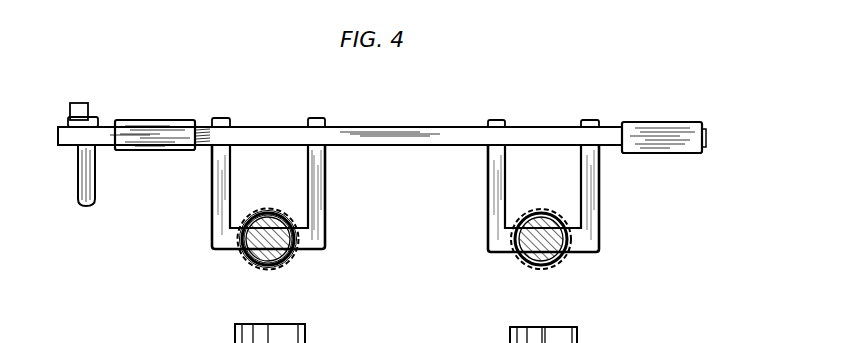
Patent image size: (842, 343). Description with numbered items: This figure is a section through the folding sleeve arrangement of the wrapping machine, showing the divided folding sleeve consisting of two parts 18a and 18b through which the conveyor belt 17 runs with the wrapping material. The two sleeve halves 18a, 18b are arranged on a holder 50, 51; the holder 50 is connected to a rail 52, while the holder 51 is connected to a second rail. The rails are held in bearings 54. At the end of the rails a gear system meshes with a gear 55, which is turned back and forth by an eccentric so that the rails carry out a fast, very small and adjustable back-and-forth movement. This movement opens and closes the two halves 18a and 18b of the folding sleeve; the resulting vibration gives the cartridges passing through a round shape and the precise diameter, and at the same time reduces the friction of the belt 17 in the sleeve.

The conveyor belt 17 is at (250, 262).
The folding sleeve part 18a is at (256, 268).
The folding sleeve part 18b is at (292, 262).
The holder 50 is at (212, 233).
The holder 51 is at (318, 198).
The rail 52 is at (407, 137).
The bearings 54 is at (167, 151).
The gear 55 is at (97, 135).